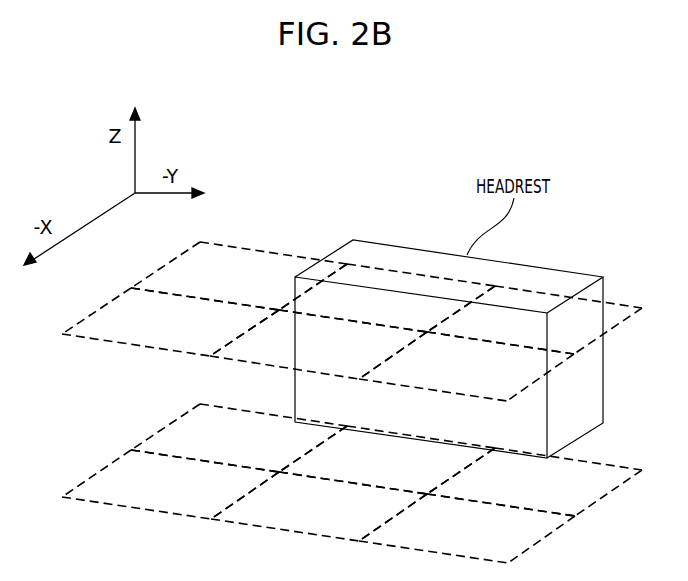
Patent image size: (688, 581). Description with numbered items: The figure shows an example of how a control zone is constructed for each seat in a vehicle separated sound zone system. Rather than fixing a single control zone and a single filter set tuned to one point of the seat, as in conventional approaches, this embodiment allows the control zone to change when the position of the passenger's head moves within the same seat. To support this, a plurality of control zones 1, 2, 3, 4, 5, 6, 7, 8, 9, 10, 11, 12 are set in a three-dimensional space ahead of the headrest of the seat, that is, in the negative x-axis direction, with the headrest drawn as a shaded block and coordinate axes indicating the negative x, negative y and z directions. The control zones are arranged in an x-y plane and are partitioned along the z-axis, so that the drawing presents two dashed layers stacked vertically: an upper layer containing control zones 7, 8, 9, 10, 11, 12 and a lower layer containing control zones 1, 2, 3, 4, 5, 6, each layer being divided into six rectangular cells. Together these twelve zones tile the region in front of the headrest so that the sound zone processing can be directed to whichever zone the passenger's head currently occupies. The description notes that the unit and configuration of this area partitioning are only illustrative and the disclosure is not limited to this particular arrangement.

The control zone 1 is at (534, 482).
The control zone 2 is at (387, 460).
The control zone 3 is at (239, 438).
The control zone 4 is at (467, 528).
The control zone 5 is at (319, 506).
The control zone 6 is at (170, 484).
The control zone 7 is at (534, 320).
The control zone 8 is at (387, 298).
The control zone 9 is at (239, 276).
The control zone 10 is at (466, 366).
The control zone 11 is at (318, 344).
The control zone 12 is at (170, 322).